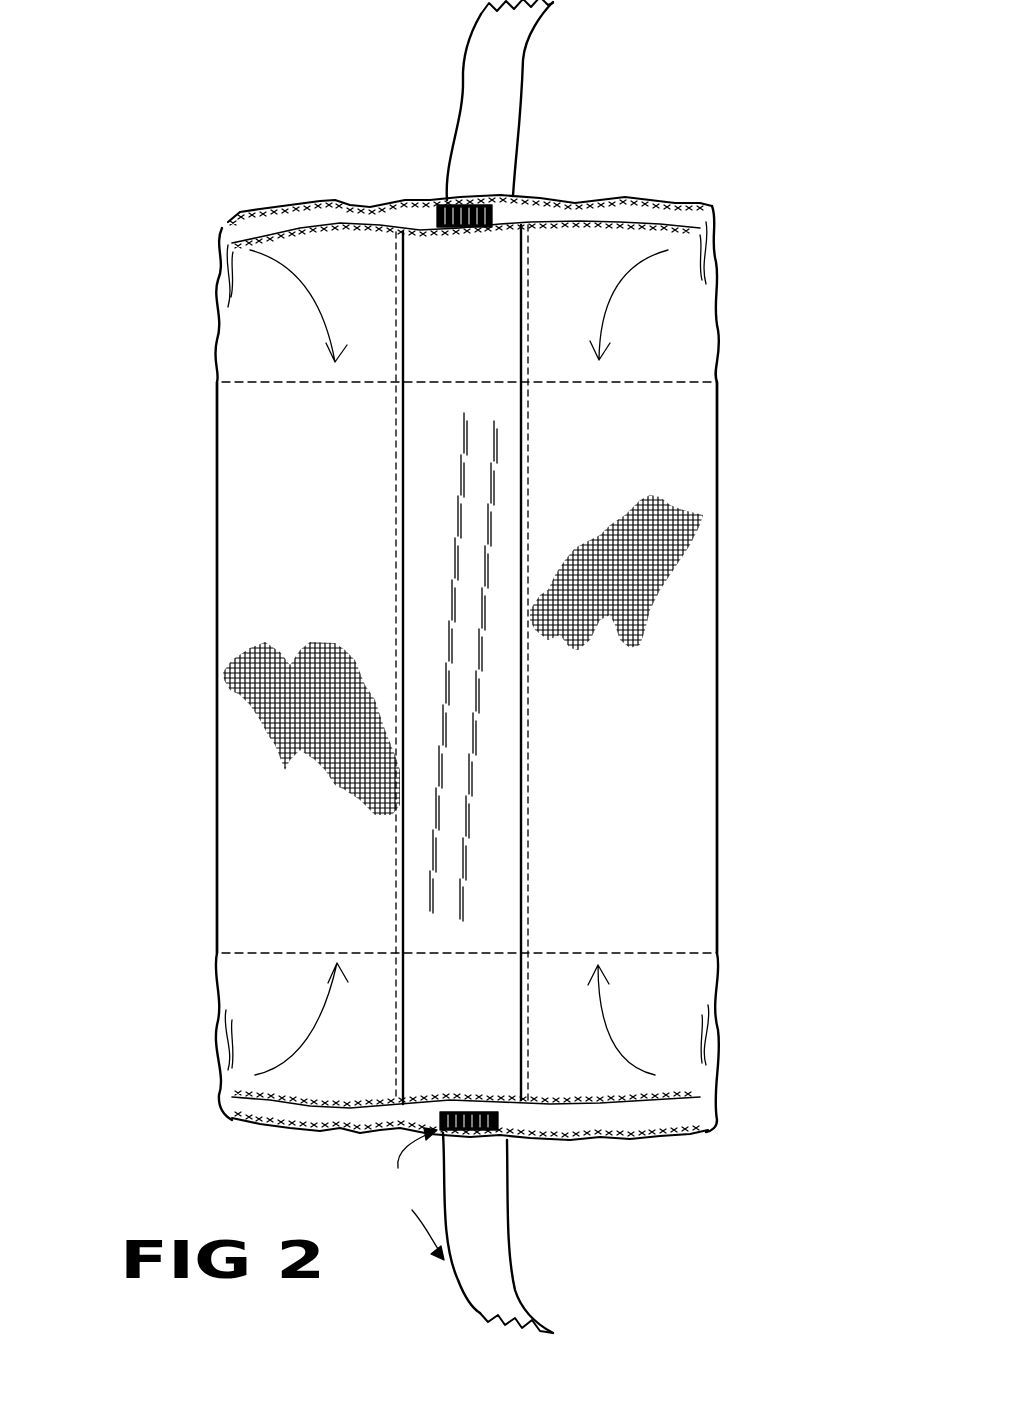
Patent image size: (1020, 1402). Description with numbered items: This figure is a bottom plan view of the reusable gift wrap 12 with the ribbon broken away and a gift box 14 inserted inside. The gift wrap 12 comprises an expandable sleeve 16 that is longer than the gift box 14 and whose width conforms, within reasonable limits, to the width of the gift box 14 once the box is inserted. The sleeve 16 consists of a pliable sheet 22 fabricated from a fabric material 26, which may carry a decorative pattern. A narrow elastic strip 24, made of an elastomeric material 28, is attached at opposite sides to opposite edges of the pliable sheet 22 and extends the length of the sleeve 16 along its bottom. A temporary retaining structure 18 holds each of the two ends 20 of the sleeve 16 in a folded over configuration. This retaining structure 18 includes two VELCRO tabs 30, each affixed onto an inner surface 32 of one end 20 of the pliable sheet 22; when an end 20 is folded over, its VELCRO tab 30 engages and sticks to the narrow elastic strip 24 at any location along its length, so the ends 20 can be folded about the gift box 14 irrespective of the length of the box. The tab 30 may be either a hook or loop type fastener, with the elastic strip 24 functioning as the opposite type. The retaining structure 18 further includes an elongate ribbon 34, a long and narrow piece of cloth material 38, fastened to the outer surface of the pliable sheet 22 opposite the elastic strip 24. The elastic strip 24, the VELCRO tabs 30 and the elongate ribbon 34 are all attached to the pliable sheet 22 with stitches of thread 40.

The reusable gift wrap 12 is at (748, 518).
The gift box 14 is at (248, 476).
The expandable sleeve 16 is at (217, 846).
The structure for temporarily retaining 18 is at (418, 1194).
The ends 20 is at (289, 205).
The pliable sheet 22 is at (700, 762).
The narrow elastic strip 24 is at (422, 452).
The fabric material 26 is at (703, 672).
The elastomeric material 28 is at (503, 878).
The VELCRO tab 30 is at (450, 200).
The inner surface 32 is at (623, 222).
The elongate ribbon 34 is at (467, 62).
The cloth material 38 is at (496, 1278).
The stitches of thread 40 is at (479, 228).